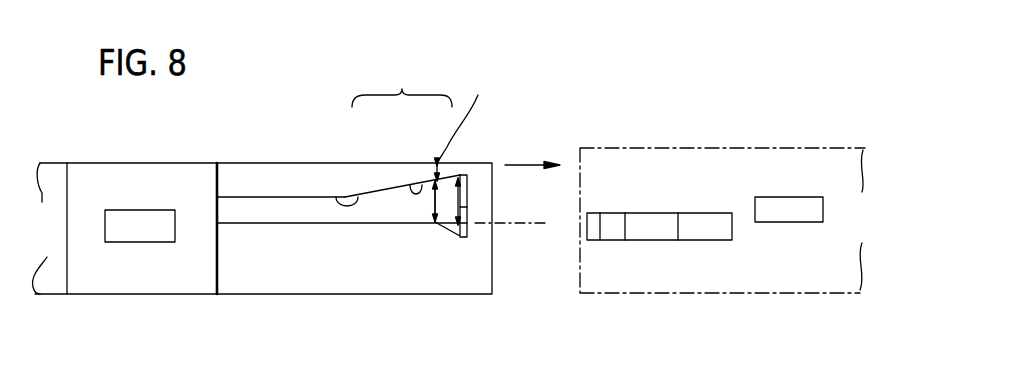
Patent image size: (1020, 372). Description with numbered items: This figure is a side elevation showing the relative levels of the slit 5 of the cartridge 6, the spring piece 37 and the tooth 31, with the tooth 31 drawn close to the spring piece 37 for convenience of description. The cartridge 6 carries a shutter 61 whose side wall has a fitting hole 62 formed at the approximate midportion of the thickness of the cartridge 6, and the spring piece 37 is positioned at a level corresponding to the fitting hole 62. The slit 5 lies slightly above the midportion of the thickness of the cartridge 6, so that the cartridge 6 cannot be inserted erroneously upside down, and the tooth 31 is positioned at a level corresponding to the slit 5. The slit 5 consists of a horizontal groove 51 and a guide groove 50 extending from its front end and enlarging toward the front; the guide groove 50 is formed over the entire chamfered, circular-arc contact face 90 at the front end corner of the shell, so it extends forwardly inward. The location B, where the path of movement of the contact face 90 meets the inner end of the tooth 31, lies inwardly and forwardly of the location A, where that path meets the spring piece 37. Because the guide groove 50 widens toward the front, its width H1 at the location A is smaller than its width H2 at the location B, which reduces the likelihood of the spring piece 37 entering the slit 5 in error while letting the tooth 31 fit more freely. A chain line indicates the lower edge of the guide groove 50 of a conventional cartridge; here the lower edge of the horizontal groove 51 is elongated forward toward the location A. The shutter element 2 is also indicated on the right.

The recording medium / sheet 2 is at (827, 143).
The slit 5 is at (402, 85).
The cartridge 6 is at (272, 172).
The tooth 31 is at (777, 207).
The spring piece 37 is at (652, 227).
The guide groove 50 is at (418, 186).
The horizontal groove 51 is at (357, 195).
The shutter 61 is at (167, 175).
The fitting hole 62 is at (143, 236).
The contact face 90 is at (480, 282).
The location A is at (462, 127).
The location B is at (463, 168).
The width H1 is at (435, 207).
The width H2 is at (467, 207).